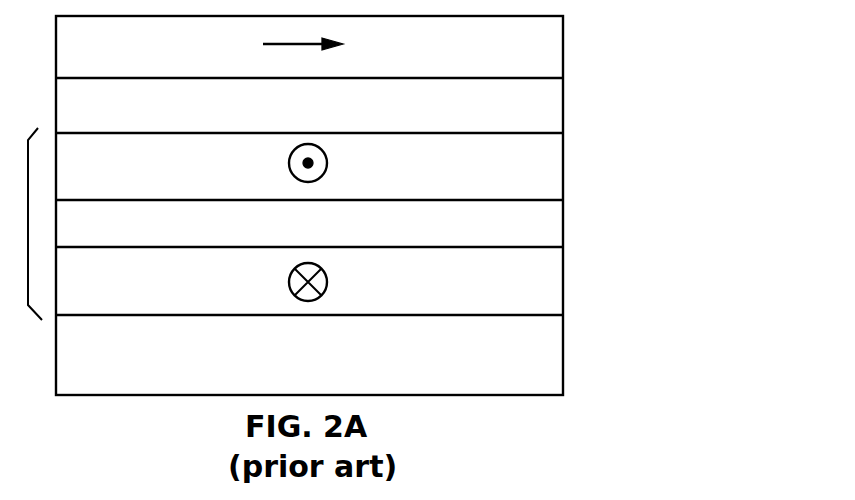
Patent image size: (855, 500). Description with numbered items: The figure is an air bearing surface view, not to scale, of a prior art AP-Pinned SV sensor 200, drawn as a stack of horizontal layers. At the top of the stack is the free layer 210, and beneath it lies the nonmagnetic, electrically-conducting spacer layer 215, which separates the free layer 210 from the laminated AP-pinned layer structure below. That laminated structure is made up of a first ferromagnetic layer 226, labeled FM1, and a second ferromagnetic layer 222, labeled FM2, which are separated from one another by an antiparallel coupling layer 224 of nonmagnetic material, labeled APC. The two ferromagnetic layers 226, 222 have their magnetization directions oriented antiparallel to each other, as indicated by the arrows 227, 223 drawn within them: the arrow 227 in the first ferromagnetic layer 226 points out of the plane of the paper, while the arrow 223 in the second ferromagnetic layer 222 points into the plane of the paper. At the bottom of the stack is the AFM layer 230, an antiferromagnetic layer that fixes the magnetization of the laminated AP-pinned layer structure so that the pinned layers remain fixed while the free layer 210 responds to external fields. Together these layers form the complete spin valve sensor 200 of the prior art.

The AP-Pinned SV sensor 200 is at (377, 251).
The free layer 210 is at (550, 56).
The spacer layer 215 is at (550, 110).
The first ferromagnetic layer 226 is at (359, 172).
The arrow 227 is at (328, 160).
The antiparallel coupling layer 224 is at (545, 228).
The second ferromagnetic layer 222 is at (355, 289).
The arrow 223 is at (328, 282).
The AFM layer 230 is at (545, 352).